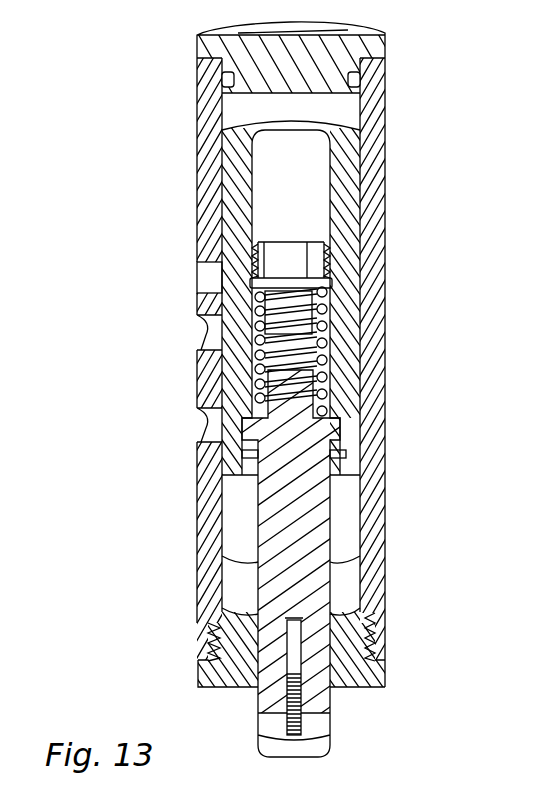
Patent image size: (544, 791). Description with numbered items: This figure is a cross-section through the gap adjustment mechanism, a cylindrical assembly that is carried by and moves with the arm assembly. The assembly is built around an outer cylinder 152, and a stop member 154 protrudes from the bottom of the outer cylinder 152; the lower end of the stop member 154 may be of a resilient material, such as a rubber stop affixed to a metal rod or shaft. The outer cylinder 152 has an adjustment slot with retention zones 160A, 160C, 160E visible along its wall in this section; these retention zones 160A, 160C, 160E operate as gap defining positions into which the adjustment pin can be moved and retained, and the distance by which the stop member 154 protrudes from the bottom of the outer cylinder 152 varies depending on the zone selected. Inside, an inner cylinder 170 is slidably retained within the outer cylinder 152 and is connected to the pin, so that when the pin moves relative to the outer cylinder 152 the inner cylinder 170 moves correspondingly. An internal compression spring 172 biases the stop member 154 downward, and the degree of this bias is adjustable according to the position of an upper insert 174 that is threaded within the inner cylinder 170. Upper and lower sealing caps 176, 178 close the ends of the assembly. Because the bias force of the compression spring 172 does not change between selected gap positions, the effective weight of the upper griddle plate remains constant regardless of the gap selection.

The outer cylinder 152 is at (375, 110).
The stop member 154 is at (295, 565).
The retention zone 160A is at (200, 278).
The retention zone 160C is at (200, 338).
The retention zone 160E is at (205, 432).
The inner cylinder 170 is at (343, 177).
The internal compression spring 172 is at (313, 358).
The upper insert 174 is at (308, 262).
The upper sealing cap 176 is at (345, 46).
The lower sealing cap 178 is at (353, 663).